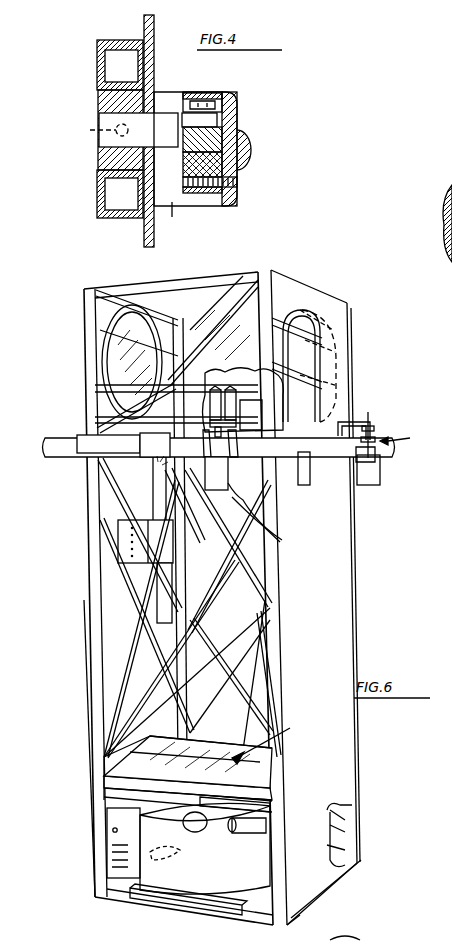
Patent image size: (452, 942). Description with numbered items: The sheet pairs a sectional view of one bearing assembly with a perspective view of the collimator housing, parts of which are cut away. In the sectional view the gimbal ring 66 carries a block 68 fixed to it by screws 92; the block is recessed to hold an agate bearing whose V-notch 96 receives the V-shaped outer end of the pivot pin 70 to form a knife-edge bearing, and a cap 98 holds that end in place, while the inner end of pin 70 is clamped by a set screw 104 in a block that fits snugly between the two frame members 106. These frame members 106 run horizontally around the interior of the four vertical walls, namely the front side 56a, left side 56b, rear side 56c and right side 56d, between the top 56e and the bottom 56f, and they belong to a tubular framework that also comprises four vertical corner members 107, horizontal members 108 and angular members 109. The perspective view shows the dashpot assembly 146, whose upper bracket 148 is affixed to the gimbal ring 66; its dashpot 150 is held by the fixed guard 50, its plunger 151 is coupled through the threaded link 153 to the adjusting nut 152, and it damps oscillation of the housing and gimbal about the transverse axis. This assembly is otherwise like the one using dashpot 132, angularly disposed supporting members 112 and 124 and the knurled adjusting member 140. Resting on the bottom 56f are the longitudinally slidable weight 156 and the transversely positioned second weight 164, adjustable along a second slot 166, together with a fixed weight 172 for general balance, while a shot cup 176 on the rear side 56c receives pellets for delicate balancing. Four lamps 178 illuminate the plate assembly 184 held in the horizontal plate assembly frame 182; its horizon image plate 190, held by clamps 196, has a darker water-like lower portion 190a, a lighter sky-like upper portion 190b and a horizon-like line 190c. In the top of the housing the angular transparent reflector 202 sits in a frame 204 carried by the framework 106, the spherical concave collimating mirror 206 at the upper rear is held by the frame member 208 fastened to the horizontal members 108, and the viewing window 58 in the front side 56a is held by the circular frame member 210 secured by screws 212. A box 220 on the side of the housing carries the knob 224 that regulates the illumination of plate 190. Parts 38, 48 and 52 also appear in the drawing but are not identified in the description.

In FIG. 6, the vertical shaft 38 is at (158, 492).
In FIG. 6, the block on rod 48 is at (155, 457).
In FIG. 6, the fixed guard 50 is at (45, 452).
In FIG. 6, the arm 52 is at (180, 552).
In FIG. 6, the front side 56a is at (100, 648).
In FIG. 6, the left side 56b is at (340, 938).
In FIG. 6, the rear side 56c is at (341, 562).
In FIG. 6, the right side 56d is at (262, 522).
In FIG. 6, the top 56e is at (180, 284).
In FIG. 6, the bottom 56f is at (247, 912).
In FIG. 6, the window 58 is at (125, 337).
In FIG. 4, the gimbal ring 66 is at (256, 133).
In FIG. 6, the gimbal ring 66 is at (95, 453).
In FIG. 4, the block 68 is at (215, 135).
In FIG. 4, the pivot pin 70 is at (160, 118).
In FIG. 4, the screws 92 is at (238, 182).
In FIG. 4, the V-notch 96 is at (228, 112).
In FIG. 4, the cap 98 is at (200, 95).
In FIG. 4, the set screw 104 is at (94, 131).
In FIG. 4, the frame members 106 is at (108, 42).
In FIG. 6, the vertical corner members 107 is at (92, 596).
In FIG. 4, the horizontal members 108 is at (146, 238).
In FIG. 6, the horizontal members 108 is at (84, 300).
In FIG. 6, the angular members 109 is at (136, 600).
In FIG. 6, the angularly disposed supporting members 112 is at (222, 396).
In FIG. 6, the angularly disposed supporting members 124 is at (232, 440).
In FIG. 6, the dashpot 132 is at (228, 484).
In FIG. 6, the internally threaded knurled member 140 is at (232, 425).
In FIG. 6, the dashpot assembly 146 is at (315, 622).
In FIG. 6, the upper bracket 148 is at (350, 428).
In FIG. 6, the dashpot 150 is at (368, 486).
In FIG. 6, the plunger 151 is at (356, 460).
In FIG. 6, the adjusting nut 152 is at (372, 430).
In FIG. 6, the threaded link 153 is at (370, 418).
In FIG. 6, the weight 156 is at (212, 900).
In FIG. 6, the second weight 164 is at (150, 872).
In FIG. 6, the second slot 166 is at (193, 830).
In FIG. 6, the fixed weight 172 is at (118, 822).
In FIG. 6, the cup 176 is at (303, 486).
In FIG. 6, the lamps 178 is at (248, 832).
In FIG. 6, the plate assembly frame 182 is at (175, 752).
In FIG. 6, the plate assembly 184 is at (275, 742).
In FIG. 6, the horizon image plate 190 is at (246, 766).
In FIG. 6, the lower darker portion 190a is at (104, 779).
In FIG. 6, the upper lighter portion 190b is at (250, 778).
In FIG. 6, the horizon-like line 190c is at (200, 745).
In FIG. 6, the clamps 196 is at (238, 740).
In FIG. 6, the transparent reflector 202 is at (222, 320).
In FIG. 6, the frame 204 is at (212, 330).
In FIG. 6, the collimating mirror 206 is at (292, 318).
In FIG. 6, the frame member 208 is at (315, 312).
In FIG. 6, the circular frame member 210 is at (118, 296).
In FIG. 6, the screws 212 is at (140, 320).
In FIG. 6, the box 220 is at (130, 552).
In FIG. 6, the knob 224 is at (118, 545).